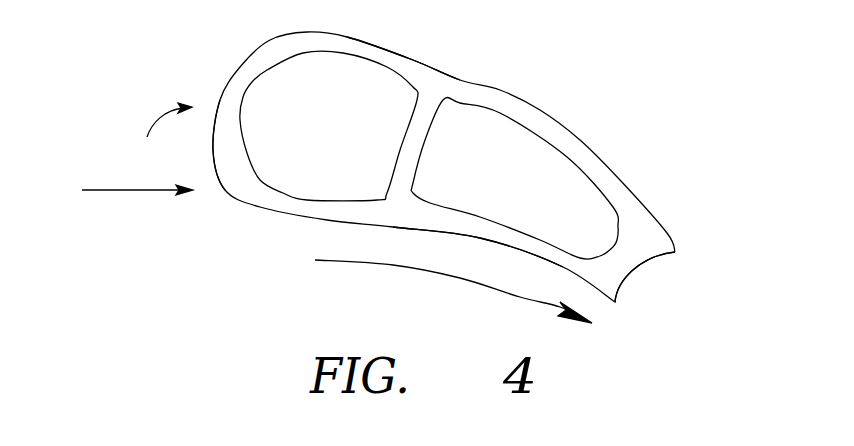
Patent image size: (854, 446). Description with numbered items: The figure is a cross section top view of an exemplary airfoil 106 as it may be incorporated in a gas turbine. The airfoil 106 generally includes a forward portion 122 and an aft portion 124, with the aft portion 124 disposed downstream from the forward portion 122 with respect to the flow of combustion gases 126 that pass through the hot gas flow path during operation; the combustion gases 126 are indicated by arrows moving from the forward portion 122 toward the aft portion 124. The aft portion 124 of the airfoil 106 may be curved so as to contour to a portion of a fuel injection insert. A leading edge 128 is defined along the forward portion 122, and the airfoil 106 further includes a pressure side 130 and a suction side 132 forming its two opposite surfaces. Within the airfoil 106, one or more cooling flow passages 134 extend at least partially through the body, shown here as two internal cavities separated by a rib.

The airfoil 106 is at (631, 94).
The forward portion 122 is at (154, 139).
The aft portion 124 is at (646, 272).
The flow of combustion gases 126 is at (120, 191).
The leading edge 128 is at (217, 104).
The pressure side 130 is at (499, 243).
The suction side 132 is at (413, 59).
The cooling flow passages 134 is at (345, 127).